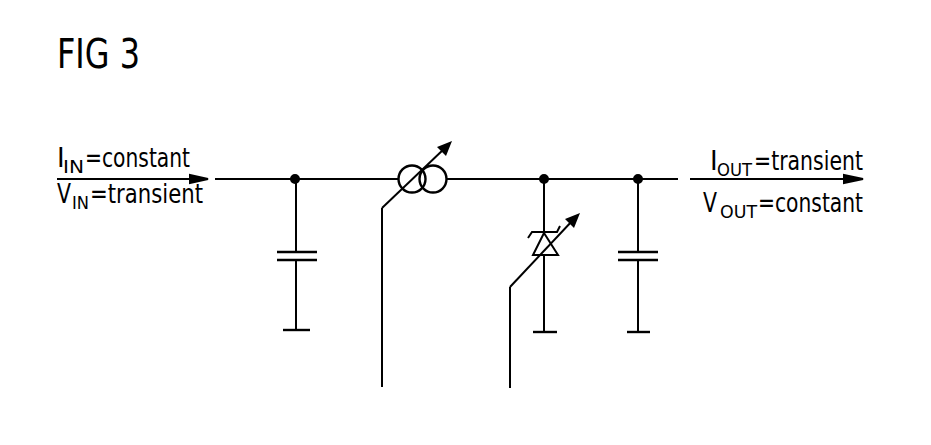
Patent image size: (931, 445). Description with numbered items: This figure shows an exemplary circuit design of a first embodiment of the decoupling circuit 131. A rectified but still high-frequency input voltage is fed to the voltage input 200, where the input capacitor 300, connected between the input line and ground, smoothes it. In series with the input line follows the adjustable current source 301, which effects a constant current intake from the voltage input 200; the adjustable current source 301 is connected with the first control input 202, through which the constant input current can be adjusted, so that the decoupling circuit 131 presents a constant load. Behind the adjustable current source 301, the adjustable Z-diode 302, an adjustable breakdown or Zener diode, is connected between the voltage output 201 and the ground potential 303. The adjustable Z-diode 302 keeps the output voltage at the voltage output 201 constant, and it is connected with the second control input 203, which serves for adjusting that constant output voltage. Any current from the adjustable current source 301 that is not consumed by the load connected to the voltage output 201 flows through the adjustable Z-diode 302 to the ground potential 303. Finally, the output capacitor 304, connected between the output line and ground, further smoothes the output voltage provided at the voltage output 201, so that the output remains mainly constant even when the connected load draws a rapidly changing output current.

The decoupling circuit 131 is at (598, 96).
The voltage input 200 is at (237, 178).
The voltage output 201 is at (667, 177).
The first control input 202 is at (383, 355).
The second control input 203 is at (512, 355).
The input capacitor 300 is at (277, 253).
The adjustable current source 301 is at (403, 164).
The adjustable Z-diode 302 is at (533, 243).
The ground potential 303 is at (555, 328).
The output capacitor 304 is at (660, 255).